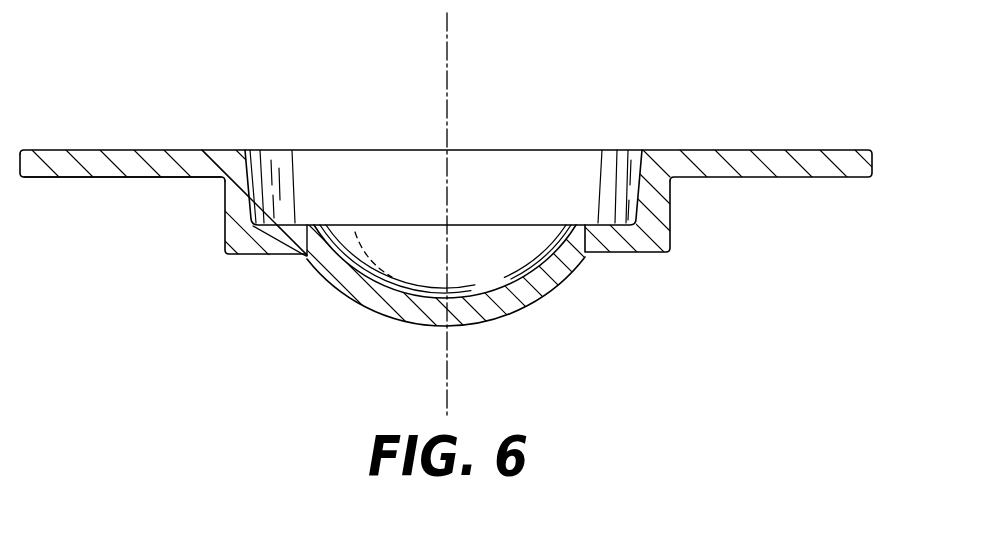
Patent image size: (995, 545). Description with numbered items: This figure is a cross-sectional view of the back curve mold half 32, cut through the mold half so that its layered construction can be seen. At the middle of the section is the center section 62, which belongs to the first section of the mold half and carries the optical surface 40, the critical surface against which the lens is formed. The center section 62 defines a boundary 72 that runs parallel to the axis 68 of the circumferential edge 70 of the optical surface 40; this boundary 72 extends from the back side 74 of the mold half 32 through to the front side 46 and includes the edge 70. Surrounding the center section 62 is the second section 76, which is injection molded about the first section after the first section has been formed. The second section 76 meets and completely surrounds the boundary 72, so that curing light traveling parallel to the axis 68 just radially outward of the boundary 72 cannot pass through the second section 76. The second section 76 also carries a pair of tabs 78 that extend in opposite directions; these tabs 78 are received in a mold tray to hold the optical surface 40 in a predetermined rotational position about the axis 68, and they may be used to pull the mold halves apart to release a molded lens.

The back curve mold half 32 is at (534, 92).
The optical surface 40 is at (543, 295).
The front side 46 is at (120, 178).
The center section 62 is at (390, 305).
The axis 68 is at (447, 63).
The circumferential edge 70 is at (303, 257).
The boundary 72 is at (587, 236).
The back side 74 is at (231, 150).
The second section 76 is at (224, 228).
The tabs 78 is at (108, 148).